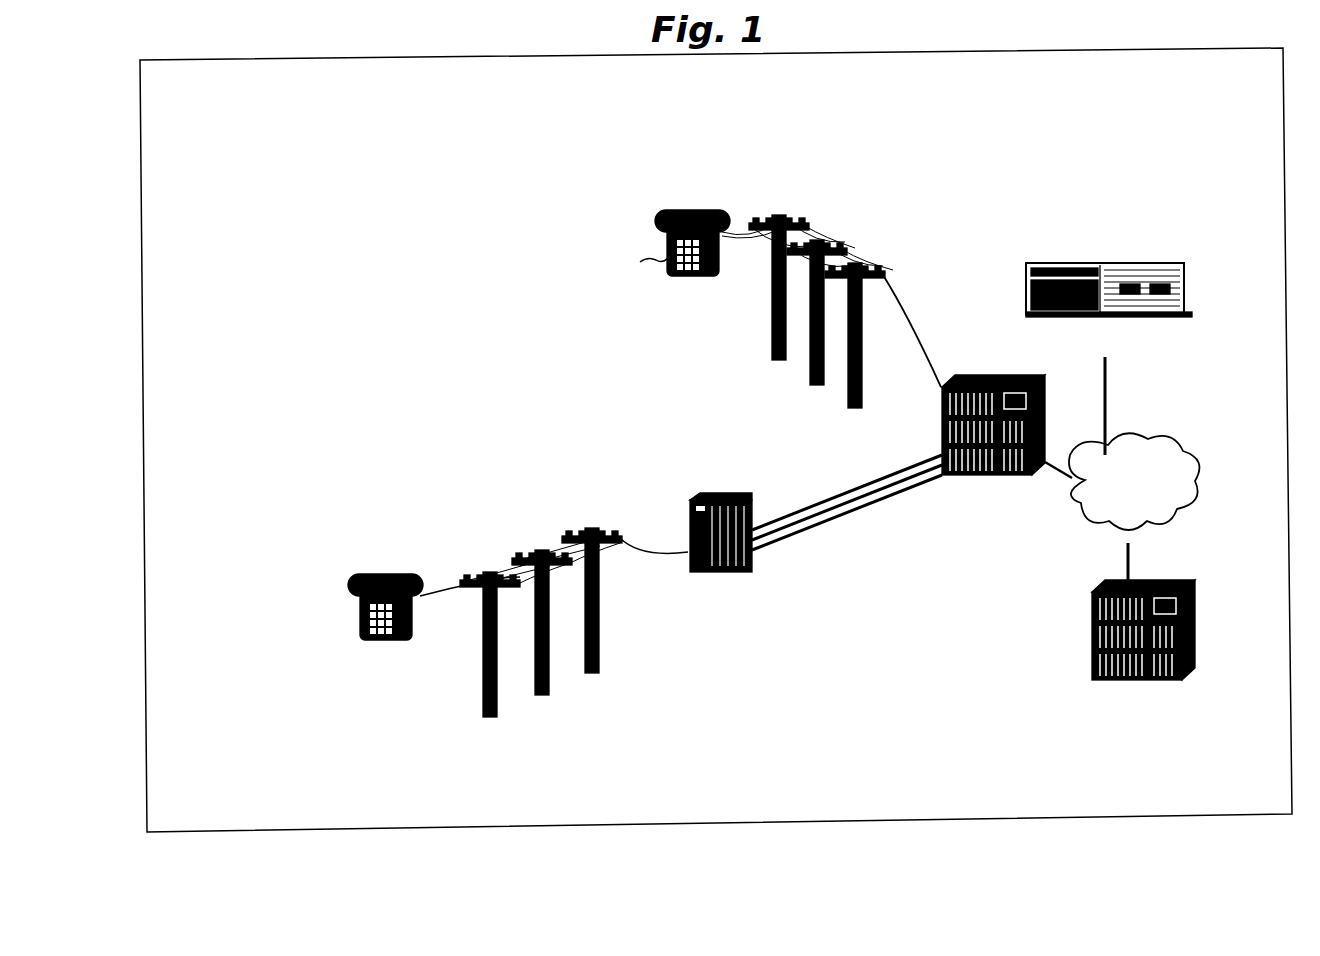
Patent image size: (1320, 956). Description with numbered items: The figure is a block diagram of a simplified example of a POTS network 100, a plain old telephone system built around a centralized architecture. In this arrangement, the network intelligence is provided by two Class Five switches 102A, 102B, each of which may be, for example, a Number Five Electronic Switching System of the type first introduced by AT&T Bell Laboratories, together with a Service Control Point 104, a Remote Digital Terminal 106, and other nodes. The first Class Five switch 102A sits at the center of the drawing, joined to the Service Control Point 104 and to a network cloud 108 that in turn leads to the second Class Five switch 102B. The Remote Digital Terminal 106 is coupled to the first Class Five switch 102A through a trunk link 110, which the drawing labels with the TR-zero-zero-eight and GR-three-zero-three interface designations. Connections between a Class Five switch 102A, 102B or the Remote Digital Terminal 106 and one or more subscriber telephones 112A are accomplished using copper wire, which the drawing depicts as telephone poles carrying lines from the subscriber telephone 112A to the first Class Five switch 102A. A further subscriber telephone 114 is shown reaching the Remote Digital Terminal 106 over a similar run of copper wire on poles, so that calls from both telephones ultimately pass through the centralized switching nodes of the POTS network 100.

The POTS network 100 is at (712, 127).
The Class 5 switch 102A is at (955, 480).
The Class 5 switch 102B is at (1092, 645).
The Service Control Point 104 is at (1145, 261).
The Remote Digital Terminal 106 is at (737, 493).
The public switched telephone network 108 is at (1160, 462).
The TR-008/GR-303 link lines 110 is at (815, 529).
The subscriber telephone 112A is at (658, 260).
The telephone with pole lines 114 is at (395, 570).